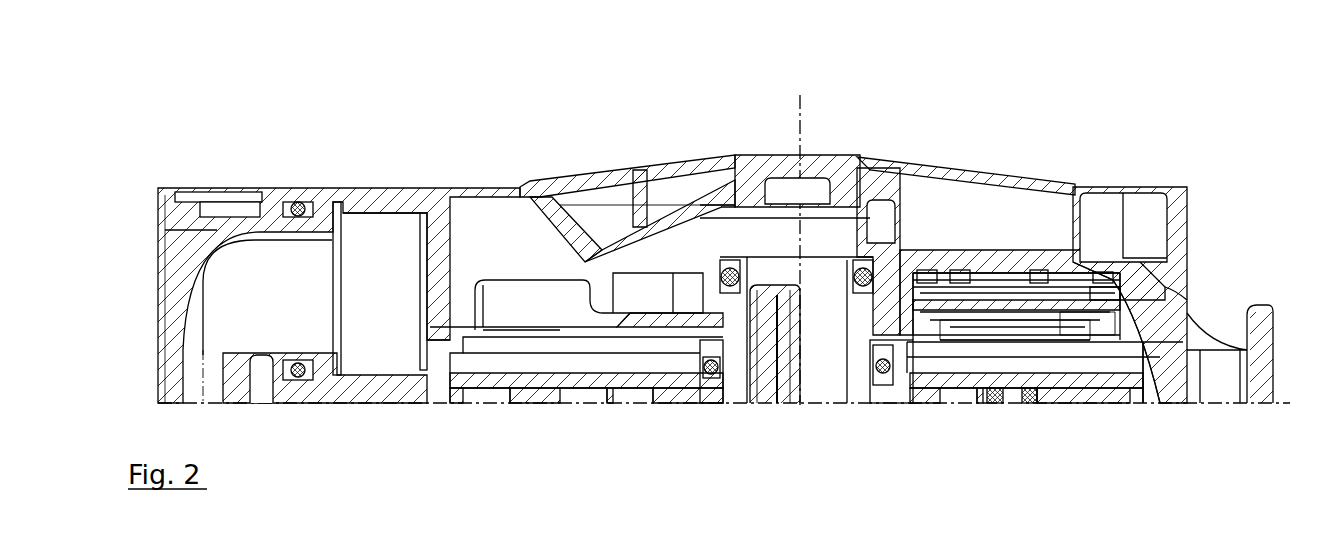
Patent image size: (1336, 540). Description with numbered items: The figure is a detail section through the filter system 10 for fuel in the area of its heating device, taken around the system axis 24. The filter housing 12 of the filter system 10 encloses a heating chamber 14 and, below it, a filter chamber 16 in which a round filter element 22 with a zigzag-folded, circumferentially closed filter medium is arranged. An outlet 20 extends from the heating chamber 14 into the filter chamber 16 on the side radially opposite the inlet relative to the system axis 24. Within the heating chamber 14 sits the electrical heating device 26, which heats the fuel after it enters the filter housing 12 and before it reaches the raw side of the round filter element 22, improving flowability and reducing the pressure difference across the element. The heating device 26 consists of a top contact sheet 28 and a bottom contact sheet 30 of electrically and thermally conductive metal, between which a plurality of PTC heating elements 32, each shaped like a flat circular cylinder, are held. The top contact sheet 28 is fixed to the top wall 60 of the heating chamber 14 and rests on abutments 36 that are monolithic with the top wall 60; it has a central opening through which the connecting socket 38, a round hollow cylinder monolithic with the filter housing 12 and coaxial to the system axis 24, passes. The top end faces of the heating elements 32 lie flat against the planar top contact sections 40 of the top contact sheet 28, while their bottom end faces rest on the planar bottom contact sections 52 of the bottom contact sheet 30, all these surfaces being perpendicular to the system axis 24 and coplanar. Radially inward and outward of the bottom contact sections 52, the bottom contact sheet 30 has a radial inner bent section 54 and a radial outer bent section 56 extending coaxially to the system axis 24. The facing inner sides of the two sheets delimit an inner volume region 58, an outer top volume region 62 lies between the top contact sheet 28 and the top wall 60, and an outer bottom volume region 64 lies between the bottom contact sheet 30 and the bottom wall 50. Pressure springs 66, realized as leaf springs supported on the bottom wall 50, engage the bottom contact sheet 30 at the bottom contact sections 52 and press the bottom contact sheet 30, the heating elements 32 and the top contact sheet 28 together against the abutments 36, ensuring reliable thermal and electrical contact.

The filter system 10 is at (118, 120).
The filter housing 12 is at (158, 362).
The heating chamber 14 is at (548, 304).
The filter chamber 16 is at (443, 393).
The outlet 20 is at (1135, 387).
The round filter element 22 is at (513, 392).
The system axis 24 is at (806, 97).
The electrical heating device 26 is at (934, 280).
The top contact sheet 28 is at (1162, 272).
The bottom contact sheet 30 is at (1150, 313).
The heating elements 32 is at (981, 285).
The abutments 36 is at (975, 278).
The connecting socket 38 is at (710, 255).
The top contact sections 40 is at (1057, 270).
The bottom wall 50 is at (513, 337).
The bottom contact sections 52 is at (1005, 385).
The radial inner bent section 54 is at (917, 340).
The radial outer bent section 56 is at (1075, 327).
The inner volume region 58 is at (1090, 303).
The top wall 60 is at (1078, 287).
The outer top volume region 62 is at (1080, 262).
The outer bottom volume region 64 is at (1100, 335).
The pressure springs 66 is at (965, 320).